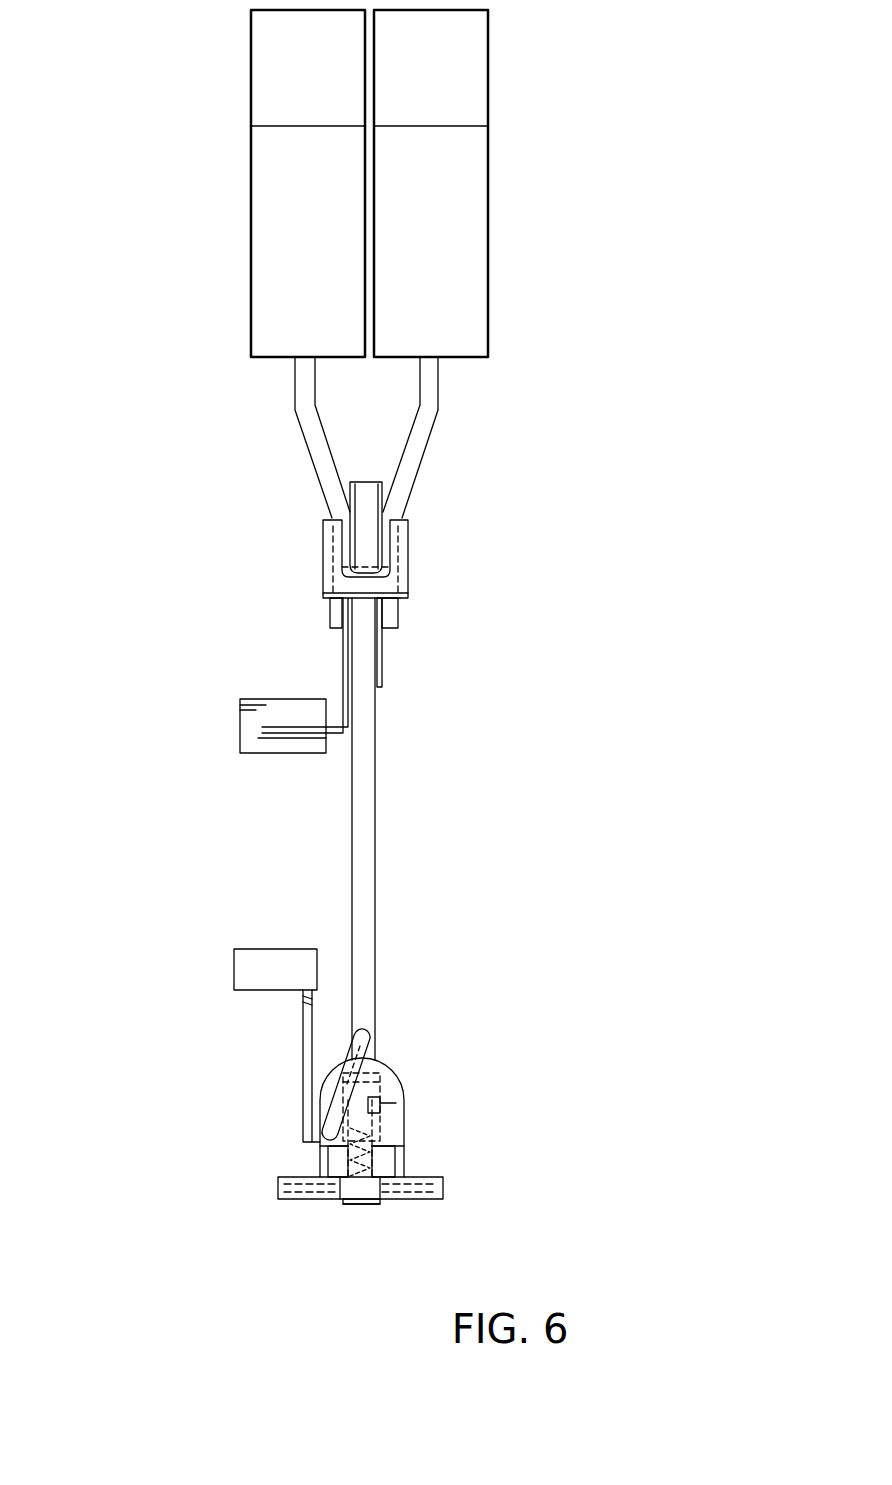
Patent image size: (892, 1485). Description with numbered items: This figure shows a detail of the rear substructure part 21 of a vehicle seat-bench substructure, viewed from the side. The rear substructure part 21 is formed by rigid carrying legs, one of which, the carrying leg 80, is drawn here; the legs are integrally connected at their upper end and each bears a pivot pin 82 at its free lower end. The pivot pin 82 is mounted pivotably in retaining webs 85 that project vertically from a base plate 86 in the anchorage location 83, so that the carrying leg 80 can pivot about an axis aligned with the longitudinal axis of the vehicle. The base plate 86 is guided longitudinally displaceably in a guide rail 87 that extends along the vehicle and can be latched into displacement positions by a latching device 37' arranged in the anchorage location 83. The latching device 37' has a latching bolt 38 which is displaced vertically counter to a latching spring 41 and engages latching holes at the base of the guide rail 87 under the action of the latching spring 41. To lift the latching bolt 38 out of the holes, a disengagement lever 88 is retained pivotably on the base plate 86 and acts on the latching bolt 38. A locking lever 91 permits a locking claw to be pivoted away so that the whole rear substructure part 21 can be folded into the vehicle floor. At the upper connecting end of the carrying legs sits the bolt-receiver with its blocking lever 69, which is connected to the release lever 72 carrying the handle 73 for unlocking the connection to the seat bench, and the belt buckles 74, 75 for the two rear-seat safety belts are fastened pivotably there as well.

The belt buckle 75 is at (324, 203).
The belt buckle 74 is at (437, 203).
The rear substructure part 21 is at (424, 552).
The carrying leg 80 is at (380, 812).
The release lever 72 is at (344, 665).
The blocking lever 69 is at (380, 640).
The handle 73 is at (283, 748).
The locking lever 91 is at (303, 1027).
The pivot pin 82 is at (397, 1085).
The disengagement lever 88 is at (340, 1090).
The retaining web 85 is at (392, 1110).
The base plate 86 is at (320, 1162).
The latching spring 41 is at (395, 1162).
The anchorage location 83 is at (462, 1188).
The guide rail 87 is at (278, 1186).
The latching bolt 38 is at (357, 1204).
The latching device 37' is at (423, 1234).